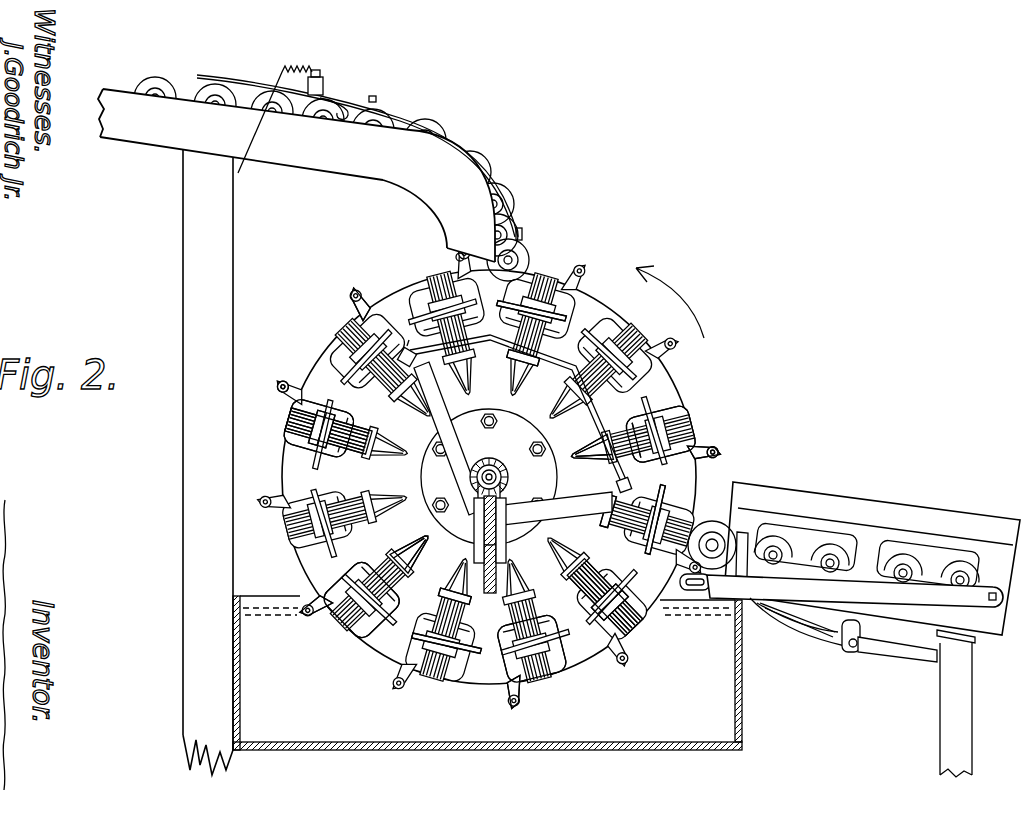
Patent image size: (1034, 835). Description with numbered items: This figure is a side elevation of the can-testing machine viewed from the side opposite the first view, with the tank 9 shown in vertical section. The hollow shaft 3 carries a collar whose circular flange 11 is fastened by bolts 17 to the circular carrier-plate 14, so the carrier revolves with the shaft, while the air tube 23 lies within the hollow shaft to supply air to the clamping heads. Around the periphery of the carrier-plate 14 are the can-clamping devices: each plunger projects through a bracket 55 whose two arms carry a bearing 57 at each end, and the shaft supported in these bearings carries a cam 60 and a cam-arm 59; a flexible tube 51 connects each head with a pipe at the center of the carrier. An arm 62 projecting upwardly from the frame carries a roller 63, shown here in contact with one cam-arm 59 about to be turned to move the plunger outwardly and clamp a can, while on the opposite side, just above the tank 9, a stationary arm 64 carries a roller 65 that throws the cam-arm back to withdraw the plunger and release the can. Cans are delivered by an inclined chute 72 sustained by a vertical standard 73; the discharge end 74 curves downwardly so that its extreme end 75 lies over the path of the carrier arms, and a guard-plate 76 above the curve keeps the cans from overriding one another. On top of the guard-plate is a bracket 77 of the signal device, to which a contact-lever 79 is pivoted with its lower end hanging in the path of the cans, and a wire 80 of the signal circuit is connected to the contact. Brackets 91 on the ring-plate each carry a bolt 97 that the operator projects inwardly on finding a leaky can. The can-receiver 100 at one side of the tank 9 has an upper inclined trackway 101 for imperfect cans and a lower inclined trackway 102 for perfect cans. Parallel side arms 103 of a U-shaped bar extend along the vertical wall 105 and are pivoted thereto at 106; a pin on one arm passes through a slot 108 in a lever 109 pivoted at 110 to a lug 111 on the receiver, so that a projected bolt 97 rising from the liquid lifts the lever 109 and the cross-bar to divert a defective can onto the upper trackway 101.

The hollow shaft 3 is at (508, 480).
The tank 9 is at (487, 673).
The circular flange 11 is at (489, 477).
The carrier-plate 14 is at (490, 540).
The bolts 17 is at (489, 414).
The tube 23 is at (498, 462).
The flexible tube 51 is at (423, 543).
The bracket 55 is at (676, 404).
The bearing 57 is at (286, 454).
The cam-arm 59 is at (503, 347).
The cam 60 is at (325, 368).
The arm 62 is at (432, 425).
The roller 63 is at (418, 366).
The stationary arm 64 is at (557, 517).
The roller 65 is at (630, 488).
The inclined chute 72 is at (254, 134).
The standard 73 is at (208, 462).
The discharge end 74 is at (439, 196).
The extreme end 75 is at (450, 250).
The guard-plate 76 is at (455, 132).
The bracket 77 is at (323, 89).
The contact-lever 79 is at (335, 118).
The wire 80 is at (282, 71).
The brackets 91 is at (701, 440).
The bolt 97 is at (278, 393).
The can-receiver 100 is at (867, 557).
The upper inclined trackway 101 is at (855, 510).
The lower inclined trackway 102 is at (928, 615).
The side arms 103 is at (855, 591).
The vertical wall 105 is at (997, 633).
The pivot 106 is at (991, 600).
The slot 108 is at (697, 590).
The lever 109 is at (787, 617).
The pivot 110 is at (853, 647).
The lug 111 is at (847, 622).